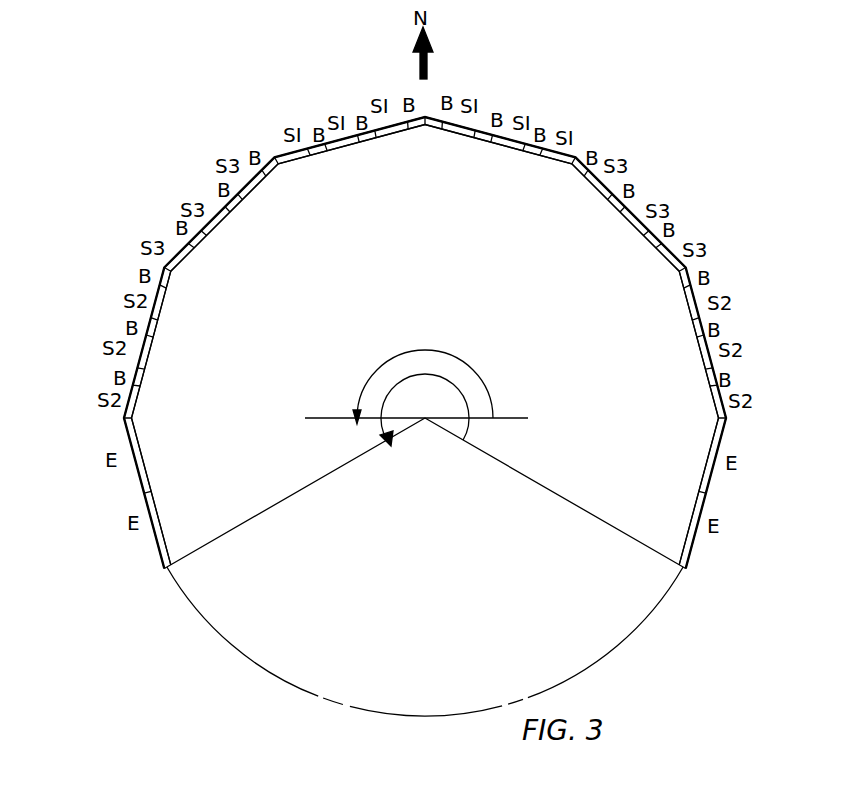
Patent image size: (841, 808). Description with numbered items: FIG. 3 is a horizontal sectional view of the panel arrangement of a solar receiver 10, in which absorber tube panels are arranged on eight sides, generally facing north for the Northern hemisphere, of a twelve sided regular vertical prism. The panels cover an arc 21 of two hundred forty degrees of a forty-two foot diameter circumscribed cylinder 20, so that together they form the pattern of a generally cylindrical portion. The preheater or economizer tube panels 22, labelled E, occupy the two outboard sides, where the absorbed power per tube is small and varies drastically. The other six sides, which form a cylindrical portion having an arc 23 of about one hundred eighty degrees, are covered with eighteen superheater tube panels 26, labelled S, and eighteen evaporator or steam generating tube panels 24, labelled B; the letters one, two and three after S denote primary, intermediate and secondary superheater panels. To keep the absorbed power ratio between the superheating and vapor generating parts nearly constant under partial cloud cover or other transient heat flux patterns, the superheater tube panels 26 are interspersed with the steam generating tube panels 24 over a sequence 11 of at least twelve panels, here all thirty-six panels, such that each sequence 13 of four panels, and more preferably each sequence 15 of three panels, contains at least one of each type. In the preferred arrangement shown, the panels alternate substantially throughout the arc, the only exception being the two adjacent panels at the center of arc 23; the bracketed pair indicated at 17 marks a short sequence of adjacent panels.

The receiver 10 is at (247, 130).
The sequence of at least twelve panels 11 is at (98, 417).
The sequence of four panels 13 is at (252, 205).
The sequence of three panels 15 is at (540, 167).
The panel section 17 is at (360, 150).
The circumscribed cylinder 20 is at (247, 657).
The arc 21 is at (463, 437).
The economizer tube panels 22 is at (152, 472).
The arc 23 is at (482, 383).
The steam generating tube panels 24 is at (172, 287).
The superheater tube panels 26 is at (253, 186).